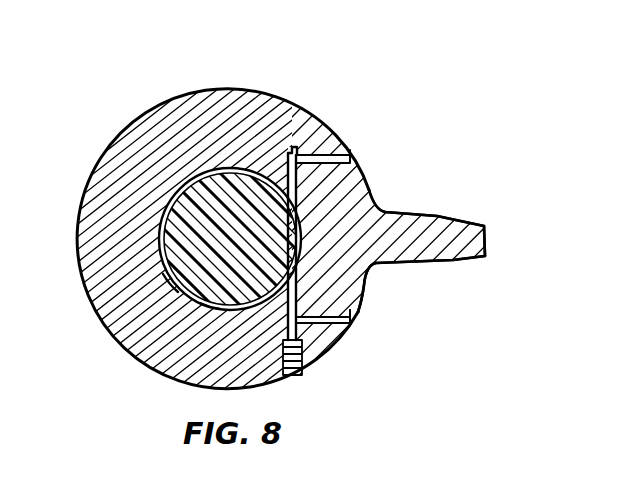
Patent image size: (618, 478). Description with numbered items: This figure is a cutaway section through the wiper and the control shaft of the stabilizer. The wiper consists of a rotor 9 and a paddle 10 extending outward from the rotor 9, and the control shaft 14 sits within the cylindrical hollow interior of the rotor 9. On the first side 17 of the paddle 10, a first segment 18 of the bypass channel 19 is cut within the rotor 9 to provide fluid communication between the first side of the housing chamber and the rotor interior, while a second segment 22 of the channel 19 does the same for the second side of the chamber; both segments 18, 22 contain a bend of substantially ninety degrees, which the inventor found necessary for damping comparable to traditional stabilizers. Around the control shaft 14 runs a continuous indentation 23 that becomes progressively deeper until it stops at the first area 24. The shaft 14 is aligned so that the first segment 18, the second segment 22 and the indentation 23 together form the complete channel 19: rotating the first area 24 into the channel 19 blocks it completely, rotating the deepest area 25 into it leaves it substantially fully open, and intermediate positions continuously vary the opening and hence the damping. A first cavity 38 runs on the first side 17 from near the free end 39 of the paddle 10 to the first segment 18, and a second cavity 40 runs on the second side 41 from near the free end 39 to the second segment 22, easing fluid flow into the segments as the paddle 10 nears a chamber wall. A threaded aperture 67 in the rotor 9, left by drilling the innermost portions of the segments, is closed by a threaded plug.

The rotor 9 is at (110, 207).
The paddle 10 is at (466, 236).
The control shaft 14 is at (191, 185).
The first side of the paddle 17 is at (462, 218).
The first segment of the channel 18 is at (292, 150).
The bypass channel 19 is at (287, 160).
The second segment of the channel 22 is at (292, 321).
The continuous indentation 23 is at (212, 178).
The first area 24 is at (172, 289).
The area with the largest cross section 25 is at (208, 311).
The first cavity 38 is at (388, 209).
The free end of the paddle 39 is at (487, 245).
The second cavity 40 is at (381, 271).
The second side of the paddle 41 is at (453, 262).
The threaded aperture 67 is at (290, 362).